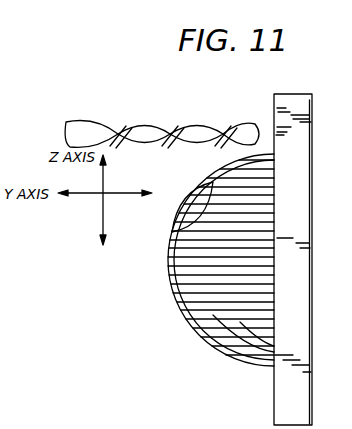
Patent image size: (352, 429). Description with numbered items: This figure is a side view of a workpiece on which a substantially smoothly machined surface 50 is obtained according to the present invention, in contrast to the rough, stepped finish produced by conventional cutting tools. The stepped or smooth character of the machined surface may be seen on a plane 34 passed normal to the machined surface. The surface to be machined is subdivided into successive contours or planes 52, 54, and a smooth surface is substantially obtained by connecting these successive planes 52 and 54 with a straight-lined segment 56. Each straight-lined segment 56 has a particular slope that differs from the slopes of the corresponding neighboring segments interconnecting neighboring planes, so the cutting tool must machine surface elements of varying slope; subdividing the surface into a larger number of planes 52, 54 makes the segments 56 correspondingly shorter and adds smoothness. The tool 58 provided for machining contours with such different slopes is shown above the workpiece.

The plane 34 is at (298, 103).
The smoothly machined surface 50 is at (205, 338).
The plane 52 is at (210, 183).
The plane 54 is at (175, 235).
The straight-lined segment 56 is at (187, 190).
The tool 58 is at (138, 127).